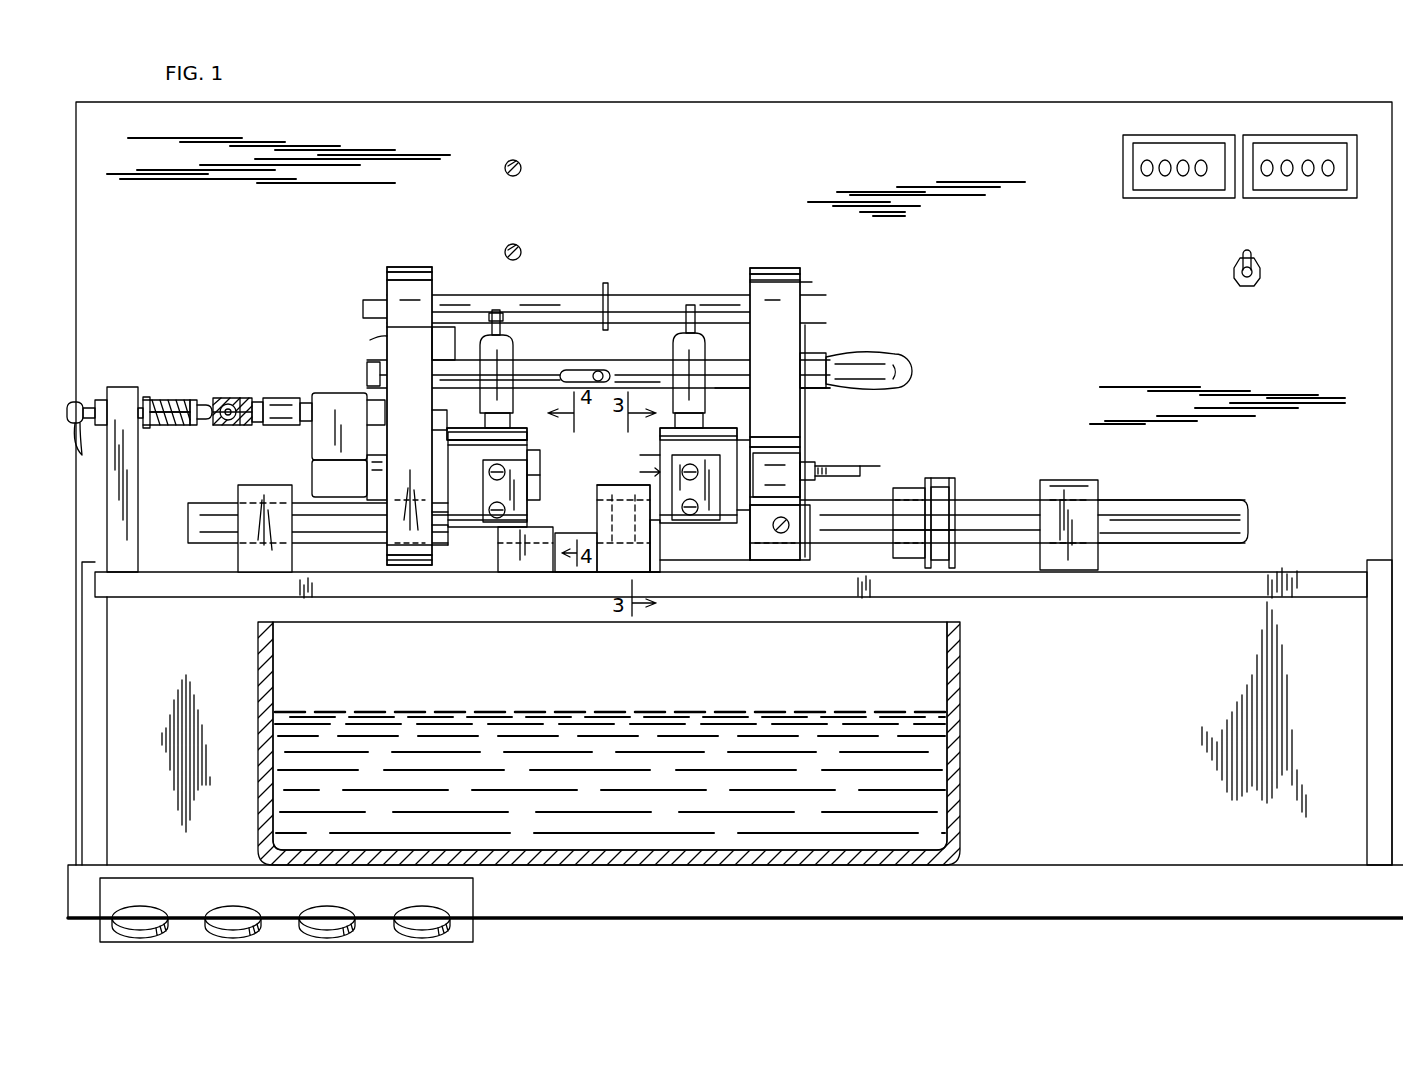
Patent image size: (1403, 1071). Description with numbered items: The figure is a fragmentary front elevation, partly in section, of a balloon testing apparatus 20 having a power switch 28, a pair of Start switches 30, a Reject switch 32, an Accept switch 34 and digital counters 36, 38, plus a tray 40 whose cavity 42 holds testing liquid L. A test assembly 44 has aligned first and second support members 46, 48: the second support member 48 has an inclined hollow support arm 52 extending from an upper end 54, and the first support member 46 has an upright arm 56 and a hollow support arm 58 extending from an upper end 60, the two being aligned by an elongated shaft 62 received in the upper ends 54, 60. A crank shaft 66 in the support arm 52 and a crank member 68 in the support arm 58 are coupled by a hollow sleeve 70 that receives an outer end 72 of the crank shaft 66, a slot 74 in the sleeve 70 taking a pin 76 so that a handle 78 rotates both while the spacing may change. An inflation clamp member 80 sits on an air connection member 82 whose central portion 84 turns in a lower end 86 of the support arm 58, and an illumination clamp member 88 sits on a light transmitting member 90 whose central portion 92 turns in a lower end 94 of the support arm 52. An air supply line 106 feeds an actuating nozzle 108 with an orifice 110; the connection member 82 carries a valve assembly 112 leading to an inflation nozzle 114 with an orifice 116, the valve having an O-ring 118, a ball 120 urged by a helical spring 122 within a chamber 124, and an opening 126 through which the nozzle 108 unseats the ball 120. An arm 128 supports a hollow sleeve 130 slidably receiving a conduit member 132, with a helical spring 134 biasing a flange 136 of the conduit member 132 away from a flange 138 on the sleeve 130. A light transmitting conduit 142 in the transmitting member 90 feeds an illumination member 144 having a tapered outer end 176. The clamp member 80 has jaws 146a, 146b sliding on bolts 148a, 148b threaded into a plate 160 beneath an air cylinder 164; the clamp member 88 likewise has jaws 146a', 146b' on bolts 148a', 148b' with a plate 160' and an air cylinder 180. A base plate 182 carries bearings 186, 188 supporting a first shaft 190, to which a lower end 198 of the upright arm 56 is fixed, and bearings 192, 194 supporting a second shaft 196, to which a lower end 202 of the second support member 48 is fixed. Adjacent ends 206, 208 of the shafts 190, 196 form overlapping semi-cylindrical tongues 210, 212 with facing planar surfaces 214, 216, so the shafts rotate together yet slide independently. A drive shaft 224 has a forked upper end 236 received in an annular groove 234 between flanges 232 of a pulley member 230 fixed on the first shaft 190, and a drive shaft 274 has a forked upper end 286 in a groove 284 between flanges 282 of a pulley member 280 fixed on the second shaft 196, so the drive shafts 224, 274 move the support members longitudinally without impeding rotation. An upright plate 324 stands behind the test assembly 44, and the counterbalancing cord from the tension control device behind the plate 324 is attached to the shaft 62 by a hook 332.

The apparatus 20 is at (924, 82).
The power switch 28 is at (1262, 270).
The start switches 30 is at (144, 908).
The reject switch 32 is at (236, 908).
The accept switch 34 is at (336, 908).
The digital counter 36 is at (1190, 190).
The digital counter 38 is at (1318, 190).
The tray 40 is at (960, 632).
The cavity 42 is at (945, 688).
The testing liquid L is at (948, 732).
The test assembly 44 is at (779, 258).
The first support member 46 is at (417, 265).
The second support member 48 is at (800, 280).
The hollow support arm 52 is at (785, 322).
The upper end 54 is at (758, 268).
The upright arm 56 is at (425, 338).
The hollow support arm 58 is at (420, 359).
The upper end 60 is at (393, 265).
The elongated shaft 62 is at (628, 295).
The crank shaft 66 is at (718, 368).
The crank member 68 is at (456, 367).
The hollow sleeve 70 is at (512, 362).
The outer end 72 is at (592, 388).
The elongated slot 74 is at (542, 372).
The pin 76 is at (598, 370).
The handle 78 is at (845, 368).
The inflation clamp member 80 is at (460, 431).
The air connection member 82 is at (346, 384).
The central portion 84 is at (384, 430).
The lower end 86 is at (372, 495).
The illumination clamp member 88 is at (724, 426).
The light transmitting member 90 is at (820, 465).
The central portion 92 is at (818, 480).
The lower end 94 is at (790, 510).
The air supply line 106 is at (88, 400).
The actuating nozzle 108 is at (200, 400).
The orifice 110 is at (194, 427).
The valve assembly 112 is at (249, 437).
The inflation nozzle 114 is at (540, 490).
The orifice 116 is at (540, 484).
The O-ring 118 is at (218, 397).
The ball 120 is at (229, 404).
The helical spring 122 is at (258, 402).
The chamber 124 is at (258, 424).
The opening 126 is at (218, 430).
The arm 128 is at (133, 492).
The hollow sleeve 130 is at (146, 395).
The conduit member 132 is at (164, 398).
The helical spring 134 is at (182, 398).
The flange 136 is at (184, 427).
The flange 138 is at (143, 395).
The light transmitting conduit 142 is at (860, 472).
The illumination member 144 is at (650, 462).
The upper jaw 146a is at (520, 478).
The lower jaw 146b is at (526, 480).
The upper jaw 146a' is at (812, 422).
The lower jaw 146b' is at (812, 440).
The bolt 148a is at (494, 540).
The bolt 148b is at (497, 533).
The bolt 148a' is at (753, 442).
The bolt 148b' is at (750, 414).
The plate 160 is at (506, 426).
The plate 160' is at (684, 414).
The air cylinder 164 is at (500, 330).
The tapered outer end 176 is at (652, 472).
The air cylinder 180 is at (700, 330).
The base plate 182 is at (1240, 580).
The bearing 186 is at (245, 550).
The bearing 188 is at (550, 575).
The first shaft 190 is at (315, 535).
The bearing 192 is at (600, 495).
The bearing 194 is at (1068, 482).
The second shaft 196 is at (1140, 500).
The lower end 198 is at (438, 550).
The lower end 202 is at (762, 570).
The adjacent end 206 is at (490, 545).
The adjacent end 208 is at (745, 545).
The semi-cylindrical tongue 210 is at (598, 540).
The semi-cylindrical tongue 212 is at (642, 562).
The planar surface 214 is at (568, 555).
The planar surface 216 is at (655, 525).
The drive shaft 224 is at (410, 560).
The pulley member 230 is at (400, 535).
The annular flanges 232 is at (403, 550).
The annular groove 234 is at (385, 520).
The forked upper end 236 is at (405, 560).
The drive shaft 274 is at (955, 482).
The pulley member 280 is at (950, 552).
The annular flanges 282 is at (945, 520).
The annular groove 284 is at (950, 492).
The forked upper end 286 is at (942, 478).
The upright plate 324 is at (1052, 270).
The hook 332 is at (606, 283).